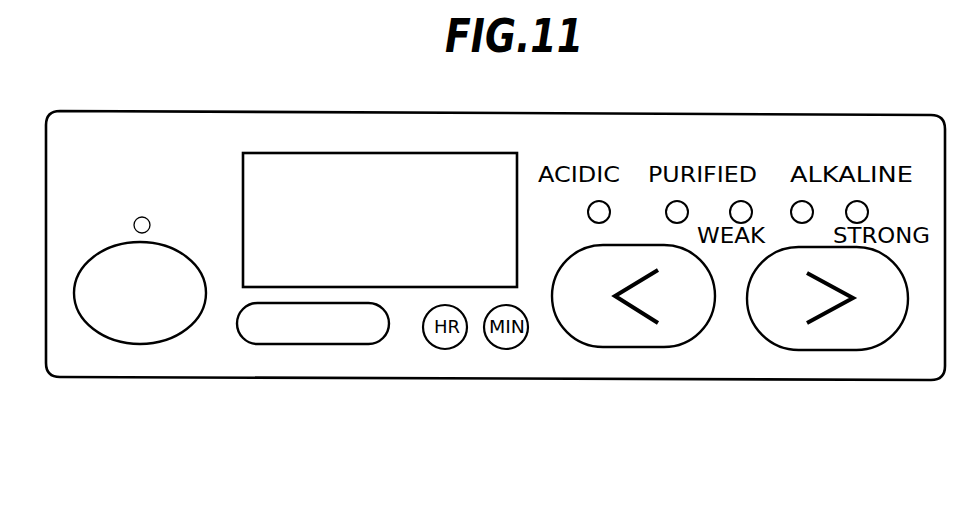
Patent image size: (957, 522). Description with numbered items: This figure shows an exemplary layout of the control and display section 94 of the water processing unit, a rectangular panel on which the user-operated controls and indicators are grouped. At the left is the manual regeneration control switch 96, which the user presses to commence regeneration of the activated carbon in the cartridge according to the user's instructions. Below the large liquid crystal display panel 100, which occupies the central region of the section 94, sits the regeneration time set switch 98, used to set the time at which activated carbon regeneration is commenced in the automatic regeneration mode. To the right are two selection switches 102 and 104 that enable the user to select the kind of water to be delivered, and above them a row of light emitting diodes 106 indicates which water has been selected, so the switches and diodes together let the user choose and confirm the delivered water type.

The control and display section 94 is at (217, 380).
The manual regeneration control switch 96 is at (128, 344).
The regeneration time set switch 98 is at (337, 344).
The liquid crystal display panel 100 is at (412, 287).
The selection switch 102 is at (642, 348).
The selection switch 104 is at (833, 350).
The light emitting diodes 106 is at (677, 223).